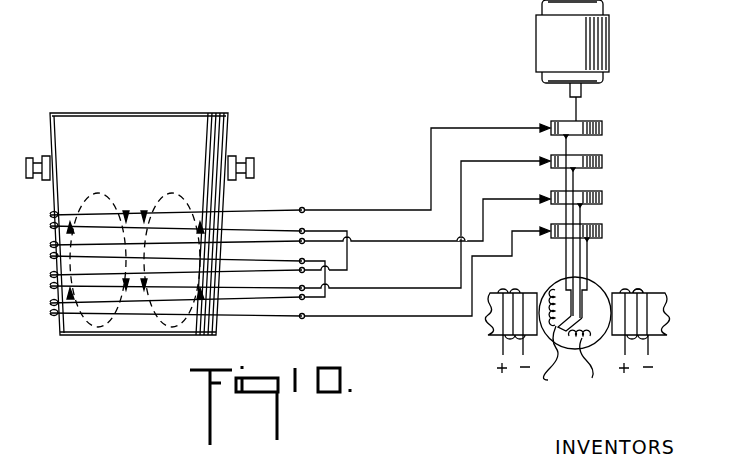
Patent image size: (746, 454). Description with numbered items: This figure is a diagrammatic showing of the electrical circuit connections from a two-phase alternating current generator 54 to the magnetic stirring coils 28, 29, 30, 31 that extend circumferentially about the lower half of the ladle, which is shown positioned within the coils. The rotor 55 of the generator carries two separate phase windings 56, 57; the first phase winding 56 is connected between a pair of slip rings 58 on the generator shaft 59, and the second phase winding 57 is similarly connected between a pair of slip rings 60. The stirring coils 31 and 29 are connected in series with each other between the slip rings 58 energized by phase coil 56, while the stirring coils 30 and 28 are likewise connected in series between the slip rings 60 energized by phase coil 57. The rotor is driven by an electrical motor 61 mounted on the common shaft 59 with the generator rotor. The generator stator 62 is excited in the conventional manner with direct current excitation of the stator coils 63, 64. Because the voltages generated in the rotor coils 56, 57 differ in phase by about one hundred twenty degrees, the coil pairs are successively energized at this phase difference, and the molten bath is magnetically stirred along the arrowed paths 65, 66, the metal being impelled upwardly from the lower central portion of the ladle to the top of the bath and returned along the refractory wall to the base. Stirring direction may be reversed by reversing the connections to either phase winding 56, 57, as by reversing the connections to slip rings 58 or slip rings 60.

The stirring coil 28 is at (222, 307).
The stirring coil 29 is at (222, 278).
The stirring coil 30 is at (222, 250).
The stirring coil 31 is at (222, 220).
The two-phase alternating current generator 54 is at (653, 255).
The rotor 55 is at (540, 366).
The phase winding 56 is at (557, 290).
The phase winding 57 is at (592, 366).
The slip rings 58 is at (600, 134).
The generator shaft 59 is at (577, 108).
The slip rings 60 is at (600, 204).
The electrical motor 61 is at (596, 32).
The generator stator 62 is at (657, 318).
The stator coil 63 is at (514, 292).
The stator coil 64 is at (655, 292).
The arrowed path 65 is at (100, 190).
The arrowed path 66 is at (174, 190).